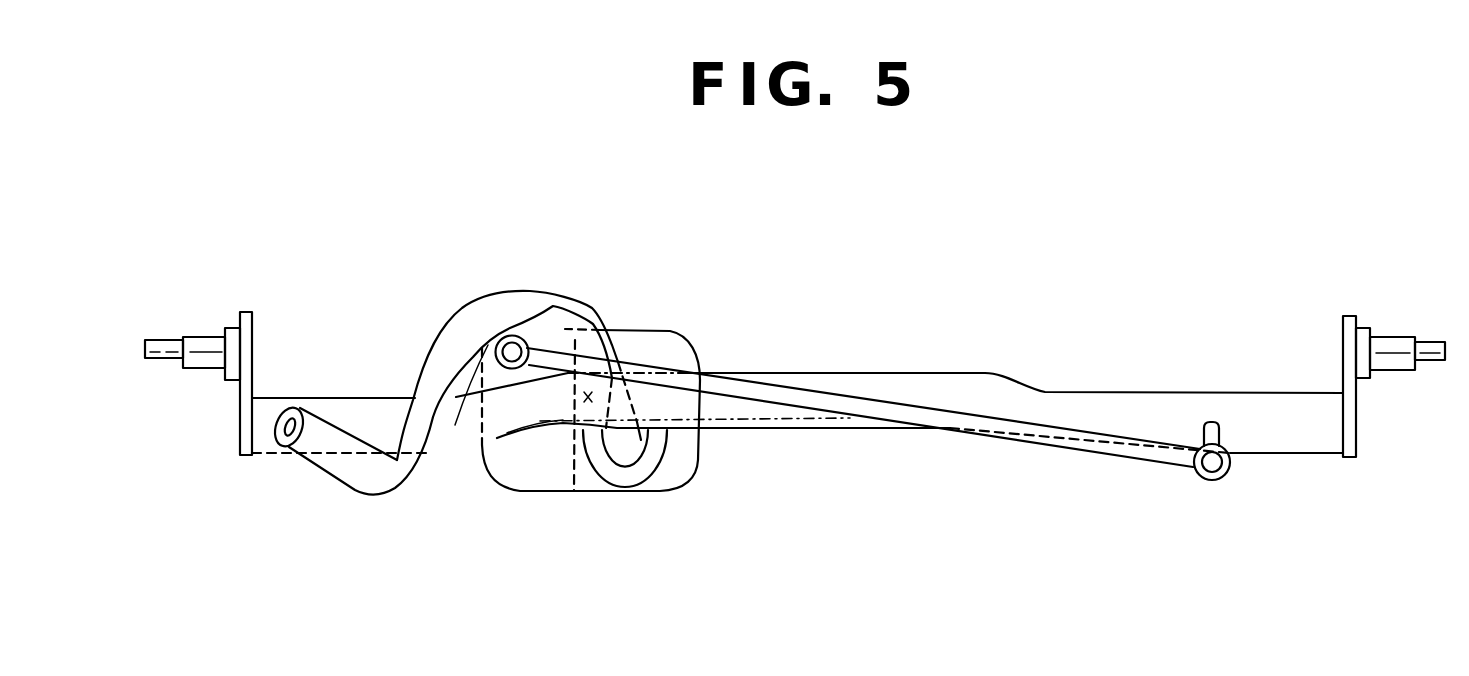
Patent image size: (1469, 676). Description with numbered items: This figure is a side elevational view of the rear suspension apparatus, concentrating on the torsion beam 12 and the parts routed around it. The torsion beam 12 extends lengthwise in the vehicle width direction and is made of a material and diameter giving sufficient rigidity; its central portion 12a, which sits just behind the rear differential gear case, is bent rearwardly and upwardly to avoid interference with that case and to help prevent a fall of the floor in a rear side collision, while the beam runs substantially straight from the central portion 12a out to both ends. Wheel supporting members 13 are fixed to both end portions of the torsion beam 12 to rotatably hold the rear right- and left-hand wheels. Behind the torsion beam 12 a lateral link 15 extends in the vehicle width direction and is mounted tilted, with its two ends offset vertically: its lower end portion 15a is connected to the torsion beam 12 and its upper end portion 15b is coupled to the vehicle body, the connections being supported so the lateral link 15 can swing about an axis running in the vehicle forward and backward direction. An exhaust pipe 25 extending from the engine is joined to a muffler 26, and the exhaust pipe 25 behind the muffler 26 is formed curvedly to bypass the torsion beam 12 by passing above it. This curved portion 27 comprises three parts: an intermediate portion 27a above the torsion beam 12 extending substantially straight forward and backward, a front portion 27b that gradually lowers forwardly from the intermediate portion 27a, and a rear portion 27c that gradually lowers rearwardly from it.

The torsion beam 12 is at (797, 365).
The central portion 12a is at (695, 419).
The wheel supporting member 13 is at (253, 320).
The lateral link 15 is at (863, 405).
The lower end portion 15a is at (1200, 477).
The upper end portion 15b is at (565, 316).
The exhaust pipe 25 is at (333, 472).
The muffler 26 is at (507, 473).
The curved portion 27 is at (468, 391).
The intermediate portion 27a is at (507, 375).
The front portion 27b is at (408, 420).
The rear portion 27c is at (573, 492).